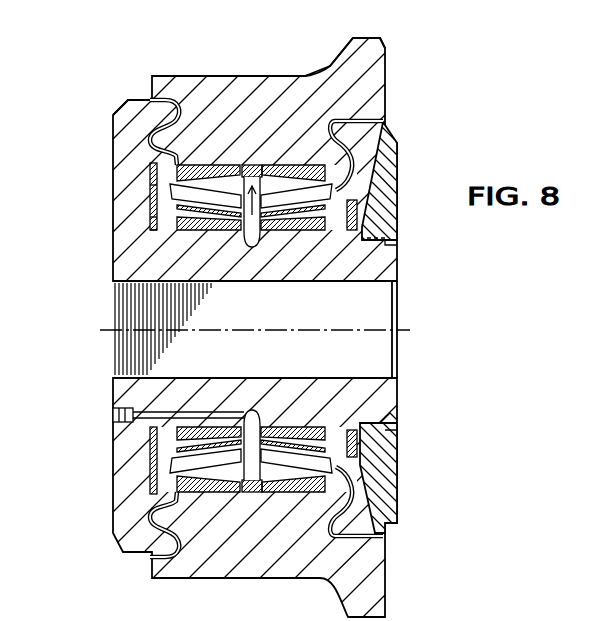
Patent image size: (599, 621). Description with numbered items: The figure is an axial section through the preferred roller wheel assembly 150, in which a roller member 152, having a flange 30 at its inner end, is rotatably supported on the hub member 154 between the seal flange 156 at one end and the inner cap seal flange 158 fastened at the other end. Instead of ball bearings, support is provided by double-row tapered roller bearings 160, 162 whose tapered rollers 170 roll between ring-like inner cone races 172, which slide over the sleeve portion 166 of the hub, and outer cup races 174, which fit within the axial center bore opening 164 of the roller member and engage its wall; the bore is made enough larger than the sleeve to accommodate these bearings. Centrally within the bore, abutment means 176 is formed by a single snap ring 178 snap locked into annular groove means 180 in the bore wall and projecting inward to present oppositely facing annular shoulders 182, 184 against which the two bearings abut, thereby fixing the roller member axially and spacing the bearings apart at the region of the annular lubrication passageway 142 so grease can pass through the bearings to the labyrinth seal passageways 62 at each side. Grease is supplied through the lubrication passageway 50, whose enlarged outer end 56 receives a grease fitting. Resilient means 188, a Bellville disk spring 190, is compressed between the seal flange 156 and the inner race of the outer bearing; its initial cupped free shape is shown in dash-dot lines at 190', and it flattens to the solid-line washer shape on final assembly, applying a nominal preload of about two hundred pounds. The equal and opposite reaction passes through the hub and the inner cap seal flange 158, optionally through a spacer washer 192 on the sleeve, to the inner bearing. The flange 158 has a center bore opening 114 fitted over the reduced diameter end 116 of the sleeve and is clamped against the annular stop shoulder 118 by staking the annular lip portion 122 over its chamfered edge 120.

The roller wheel assembly 150 is at (168, 49).
The roller member 152 is at (245, 76).
The flange 30 is at (368, 38).
The labyrinth seal passageways 62 is at (141, 132).
The outer cup races 174 is at (197, 162).
The axial center bore opening 164 is at (238, 162).
The annular groove means 180 is at (258, 162).
The inner roller bearing 162 is at (373, 183).
The spacer washer 192 is at (370, 212).
The chamfered edge 120 is at (392, 240).
The annular lip portion 122 is at (392, 244).
The center bore opening 114 is at (397, 274).
The seal flange 156 is at (123, 170).
The outer roller bearing 160 is at (147, 193).
The disk spring 190 is at (110, 220).
The initial cupped free height position of disk spring 190' is at (149, 256).
The hub member 154 is at (123, 249).
The tapered rollers 170 is at (203, 231).
The abutment means 176 is at (246, 238).
The sleeve portion 166 is at (242, 280).
The lubrication passageway 50 is at (167, 409).
The enlarged outer end 56 is at (113, 410).
The inner cone races 172 is at (203, 427).
The annular lubrication passageway 142 is at (277, 427).
The annular stop shoulder 118 is at (380, 417).
The reduced diameter annular end 116 is at (397, 430).
The inner cap seal flange 158 is at (387, 453).
The resilient means 188 is at (150, 468).
The annular shoulder 182 is at (215, 492).
The annular shoulder 184 is at (250, 490).
The snap ring 178 is at (252, 497).